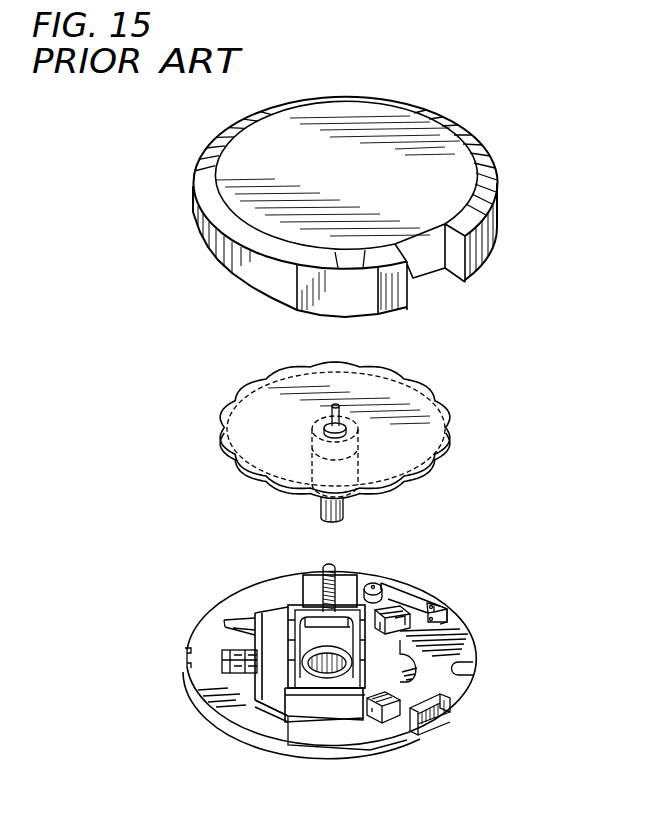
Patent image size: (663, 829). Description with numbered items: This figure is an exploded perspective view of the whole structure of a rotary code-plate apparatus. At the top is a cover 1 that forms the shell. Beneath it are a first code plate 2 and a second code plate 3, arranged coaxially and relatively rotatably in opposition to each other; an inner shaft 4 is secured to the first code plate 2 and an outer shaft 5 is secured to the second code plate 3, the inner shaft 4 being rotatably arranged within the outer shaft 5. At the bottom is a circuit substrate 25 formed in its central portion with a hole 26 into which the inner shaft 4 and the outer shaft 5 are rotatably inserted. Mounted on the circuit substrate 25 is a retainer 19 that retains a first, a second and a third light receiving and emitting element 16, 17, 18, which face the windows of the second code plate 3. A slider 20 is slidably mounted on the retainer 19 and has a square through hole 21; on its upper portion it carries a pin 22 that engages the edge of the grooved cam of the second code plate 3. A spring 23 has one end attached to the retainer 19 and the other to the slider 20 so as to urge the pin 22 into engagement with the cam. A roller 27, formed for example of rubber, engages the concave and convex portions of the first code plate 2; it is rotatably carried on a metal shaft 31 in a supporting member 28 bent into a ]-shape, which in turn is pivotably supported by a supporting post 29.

The cover 1 is at (351, 98).
The first code plate 2 is at (347, 373).
The second code plate 3 is at (370, 498).
The inner shaft 4 is at (320, 510).
The outer shaft 5 is at (312, 463).
The first light receiving and emitting element 16 is at (405, 635).
The second light receiving and emitting element 17 is at (395, 707).
The third light receiving and emitting element 18 is at (222, 648).
The retainer 19 is at (265, 708).
The slider 20 is at (322, 690).
The square through hole 21 is at (298, 630).
The pin 22 is at (297, 597).
The spring 23 is at (323, 582).
The circuit substrate 25 is at (218, 723).
The hole 26 is at (327, 667).
The roller 27 is at (390, 585).
The supporting member 28 is at (420, 598).
The supporting post 29 is at (445, 607).
The metal shaft 31 is at (372, 584).